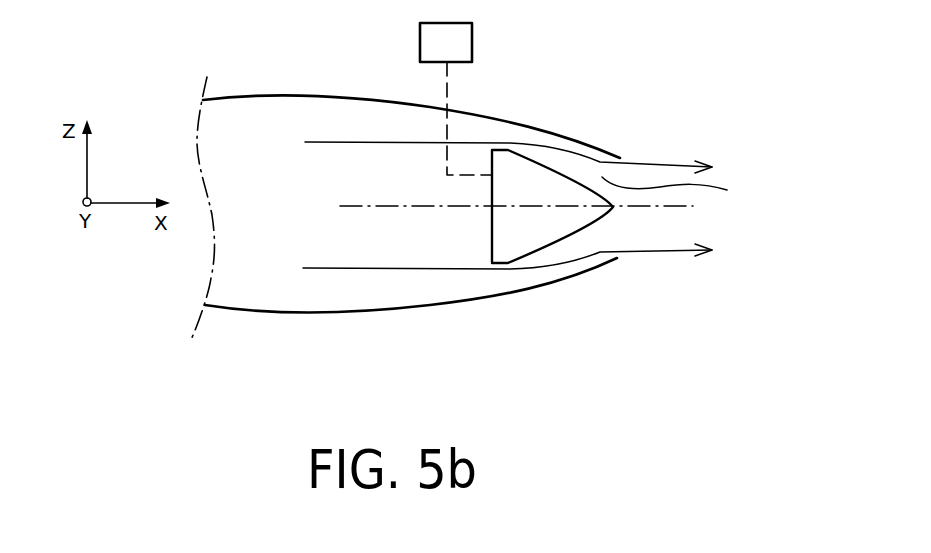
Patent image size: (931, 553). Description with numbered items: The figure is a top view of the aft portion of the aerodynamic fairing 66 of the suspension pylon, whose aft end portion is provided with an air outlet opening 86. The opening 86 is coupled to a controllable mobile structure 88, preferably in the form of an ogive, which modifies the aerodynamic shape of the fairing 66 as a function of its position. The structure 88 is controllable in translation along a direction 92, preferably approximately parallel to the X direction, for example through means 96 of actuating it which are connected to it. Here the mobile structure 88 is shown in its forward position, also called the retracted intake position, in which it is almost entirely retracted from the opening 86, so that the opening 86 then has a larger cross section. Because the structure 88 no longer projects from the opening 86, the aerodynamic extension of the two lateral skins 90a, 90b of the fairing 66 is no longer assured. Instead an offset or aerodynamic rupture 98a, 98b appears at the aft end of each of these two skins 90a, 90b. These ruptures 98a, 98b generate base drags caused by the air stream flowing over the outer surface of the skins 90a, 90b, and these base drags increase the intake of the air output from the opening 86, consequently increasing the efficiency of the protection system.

The aerodynamic fairing 66 is at (405, 195).
The lateral skin 90a is at (353, 97).
The lateral skin 90b is at (393, 313).
The actuating means 96 is at (472, 43).
The translation direction 92 is at (410, 207).
The controllable mobile structure 88 is at (528, 157).
The aerodynamic rupture 98a is at (620, 158).
The aerodynamic rupture 98b is at (618, 258).
The air outlet opening 86 is at (677, 188).